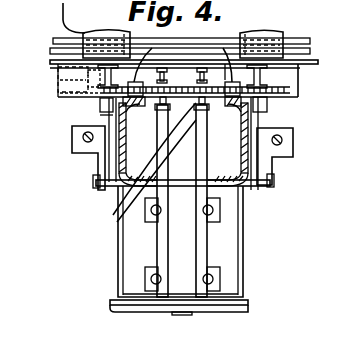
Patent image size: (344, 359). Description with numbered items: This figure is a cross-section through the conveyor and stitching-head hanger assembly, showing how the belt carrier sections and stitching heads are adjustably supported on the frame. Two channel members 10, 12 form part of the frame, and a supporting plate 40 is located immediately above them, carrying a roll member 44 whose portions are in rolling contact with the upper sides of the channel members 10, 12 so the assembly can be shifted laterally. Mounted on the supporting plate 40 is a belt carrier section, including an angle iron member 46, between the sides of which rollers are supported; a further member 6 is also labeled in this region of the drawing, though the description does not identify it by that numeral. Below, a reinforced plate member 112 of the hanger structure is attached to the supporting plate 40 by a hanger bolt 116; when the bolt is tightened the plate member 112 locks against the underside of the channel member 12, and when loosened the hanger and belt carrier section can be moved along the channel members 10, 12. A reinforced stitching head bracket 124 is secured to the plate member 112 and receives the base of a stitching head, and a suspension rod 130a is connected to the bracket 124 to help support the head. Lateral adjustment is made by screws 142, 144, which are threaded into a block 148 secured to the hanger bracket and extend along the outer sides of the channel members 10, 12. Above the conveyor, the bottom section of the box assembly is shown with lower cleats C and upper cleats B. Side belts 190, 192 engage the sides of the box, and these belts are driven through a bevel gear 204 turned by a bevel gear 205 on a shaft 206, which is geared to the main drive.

The side belt 190 is at (128, 32).
The side belt 192 is at (237, 34).
The upper cleats B is at (288, 44).
The lower cleats C is at (296, 56).
The base plate 6 is at (318, 62).
The angle iron member 46 is at (298, 80).
The bevel gear 205 is at (58, 77).
The shaft 206 is at (82, 91).
The bevel gear 204 is at (62, 100).
The supporting plate 40 is at (178, 88).
The roll member 44 is at (182, 70).
The hanger bolt 116 is at (100, 104).
The channel member 10 is at (138, 144).
The channel member 12 is at (228, 144).
The stitching head bracket 124 is at (233, 242).
The reinforced plate member 112 is at (130, 192).
The screw 144 is at (82, 141).
The screw 142 is at (278, 150).
The block 148 is at (82, 136).
The suspension rod 130a is at (119, 218).